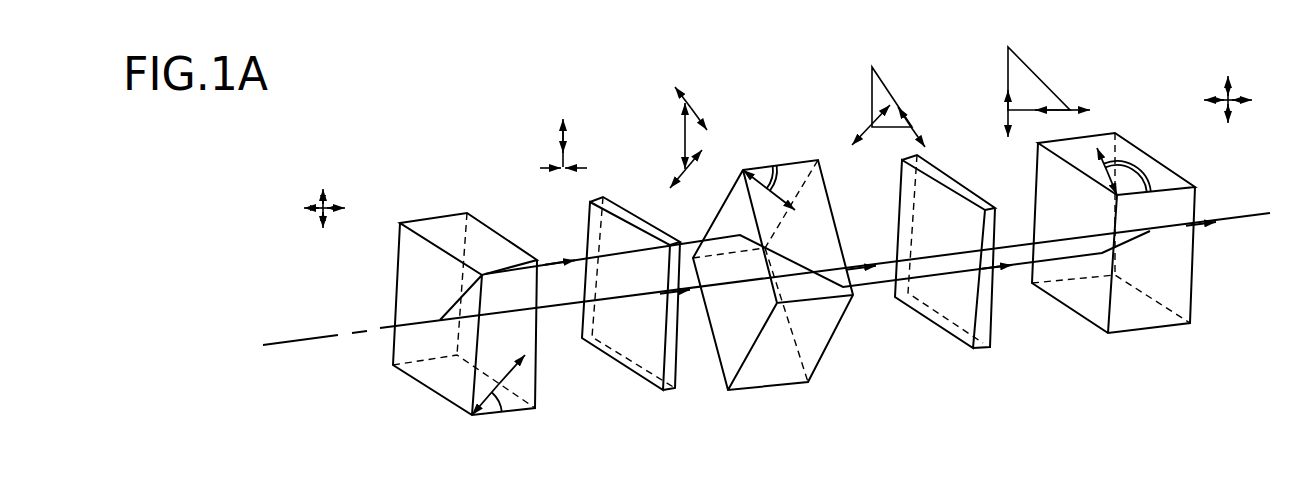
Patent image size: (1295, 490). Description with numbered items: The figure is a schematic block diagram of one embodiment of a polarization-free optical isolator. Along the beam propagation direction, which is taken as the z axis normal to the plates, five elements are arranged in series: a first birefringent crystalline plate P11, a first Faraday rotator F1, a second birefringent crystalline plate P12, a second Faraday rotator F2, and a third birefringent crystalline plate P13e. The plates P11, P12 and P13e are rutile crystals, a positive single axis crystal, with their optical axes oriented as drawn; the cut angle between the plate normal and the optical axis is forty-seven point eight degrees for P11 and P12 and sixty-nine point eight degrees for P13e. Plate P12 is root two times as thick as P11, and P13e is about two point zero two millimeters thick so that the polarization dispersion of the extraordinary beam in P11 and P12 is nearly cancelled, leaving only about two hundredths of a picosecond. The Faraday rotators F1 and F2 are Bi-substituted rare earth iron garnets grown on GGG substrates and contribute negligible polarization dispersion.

The birefringent crystalline plate P11 is at (467, 393).
The Faraday rotator F1 is at (640, 348).
The birefringent crystalline plate P12 is at (735, 360).
The Faraday rotator F2 is at (952, 317).
The birefringent crystalline plate P13e is at (1103, 308).